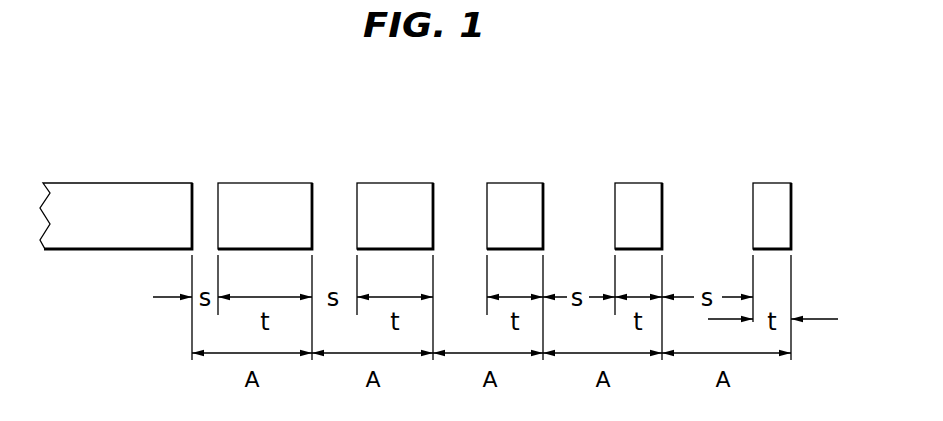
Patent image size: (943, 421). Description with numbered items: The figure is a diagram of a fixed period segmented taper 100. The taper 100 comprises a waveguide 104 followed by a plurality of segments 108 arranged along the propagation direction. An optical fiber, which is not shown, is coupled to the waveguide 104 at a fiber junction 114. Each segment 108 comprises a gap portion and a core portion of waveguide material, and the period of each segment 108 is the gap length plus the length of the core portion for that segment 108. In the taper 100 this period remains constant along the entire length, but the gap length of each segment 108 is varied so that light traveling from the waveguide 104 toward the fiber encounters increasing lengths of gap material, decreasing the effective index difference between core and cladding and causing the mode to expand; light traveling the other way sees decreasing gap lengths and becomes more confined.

The fixed period segmented taper 100 is at (238, 63).
The waveguide 104 is at (143, 173).
The segment 108 is at (191, 158).
The fiber junction 114 is at (807, 195).